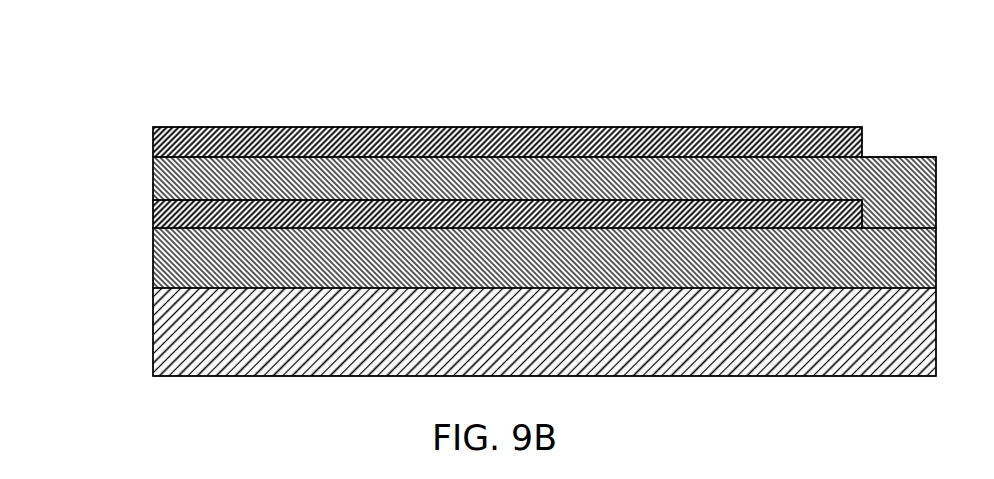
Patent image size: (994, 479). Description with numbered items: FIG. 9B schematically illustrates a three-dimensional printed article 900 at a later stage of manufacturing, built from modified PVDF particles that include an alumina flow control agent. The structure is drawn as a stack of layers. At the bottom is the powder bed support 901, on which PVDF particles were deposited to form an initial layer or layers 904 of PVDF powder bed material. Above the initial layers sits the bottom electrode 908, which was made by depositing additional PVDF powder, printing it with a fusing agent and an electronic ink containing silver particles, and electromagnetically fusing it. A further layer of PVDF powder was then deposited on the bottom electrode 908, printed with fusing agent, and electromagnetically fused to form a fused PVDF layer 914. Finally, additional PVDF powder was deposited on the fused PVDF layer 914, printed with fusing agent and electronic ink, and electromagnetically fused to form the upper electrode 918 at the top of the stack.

The 3D printed article 900 is at (258, 56).
The powder bed support 901 is at (153, 333).
The initial layers of PVDF powder bed material 904 is at (153, 260).
The bottom electrode 908 is at (153, 217).
The fused PVDF layer 914 is at (153, 175).
The upper electrode 918 is at (153, 143).